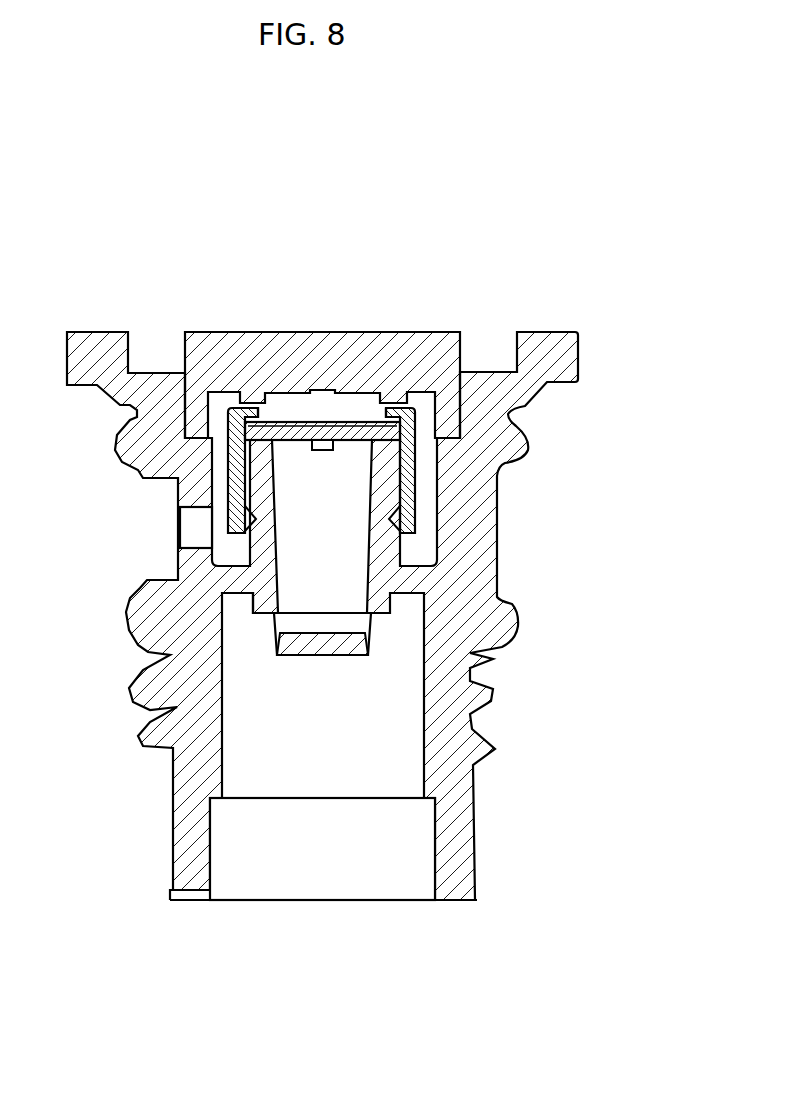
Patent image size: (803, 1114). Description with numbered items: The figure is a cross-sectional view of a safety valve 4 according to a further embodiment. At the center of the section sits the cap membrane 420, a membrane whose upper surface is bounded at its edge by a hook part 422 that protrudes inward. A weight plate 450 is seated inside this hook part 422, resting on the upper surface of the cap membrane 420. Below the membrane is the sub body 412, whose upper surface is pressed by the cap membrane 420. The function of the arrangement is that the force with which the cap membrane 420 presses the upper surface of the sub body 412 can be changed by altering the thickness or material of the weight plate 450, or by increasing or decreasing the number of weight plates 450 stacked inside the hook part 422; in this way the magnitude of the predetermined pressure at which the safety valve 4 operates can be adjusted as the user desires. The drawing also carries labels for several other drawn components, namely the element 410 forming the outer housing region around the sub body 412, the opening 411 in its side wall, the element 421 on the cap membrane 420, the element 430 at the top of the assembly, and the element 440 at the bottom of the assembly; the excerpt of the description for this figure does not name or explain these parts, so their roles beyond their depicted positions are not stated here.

The safety valve 4 is at (348, 575).
The nozzle body 410 is at (473, 612).
The communication hole 411 is at (197, 527).
The sub body 412 is at (263, 580).
The cap membrane 420 is at (415, 401).
The locking protrusion 421 is at (402, 513).
The hook part 422 is at (252, 410).
The upper cover 430 is at (402, 343).
The bottom plug 440 is at (328, 778).
The weight plate 450 is at (322, 421).